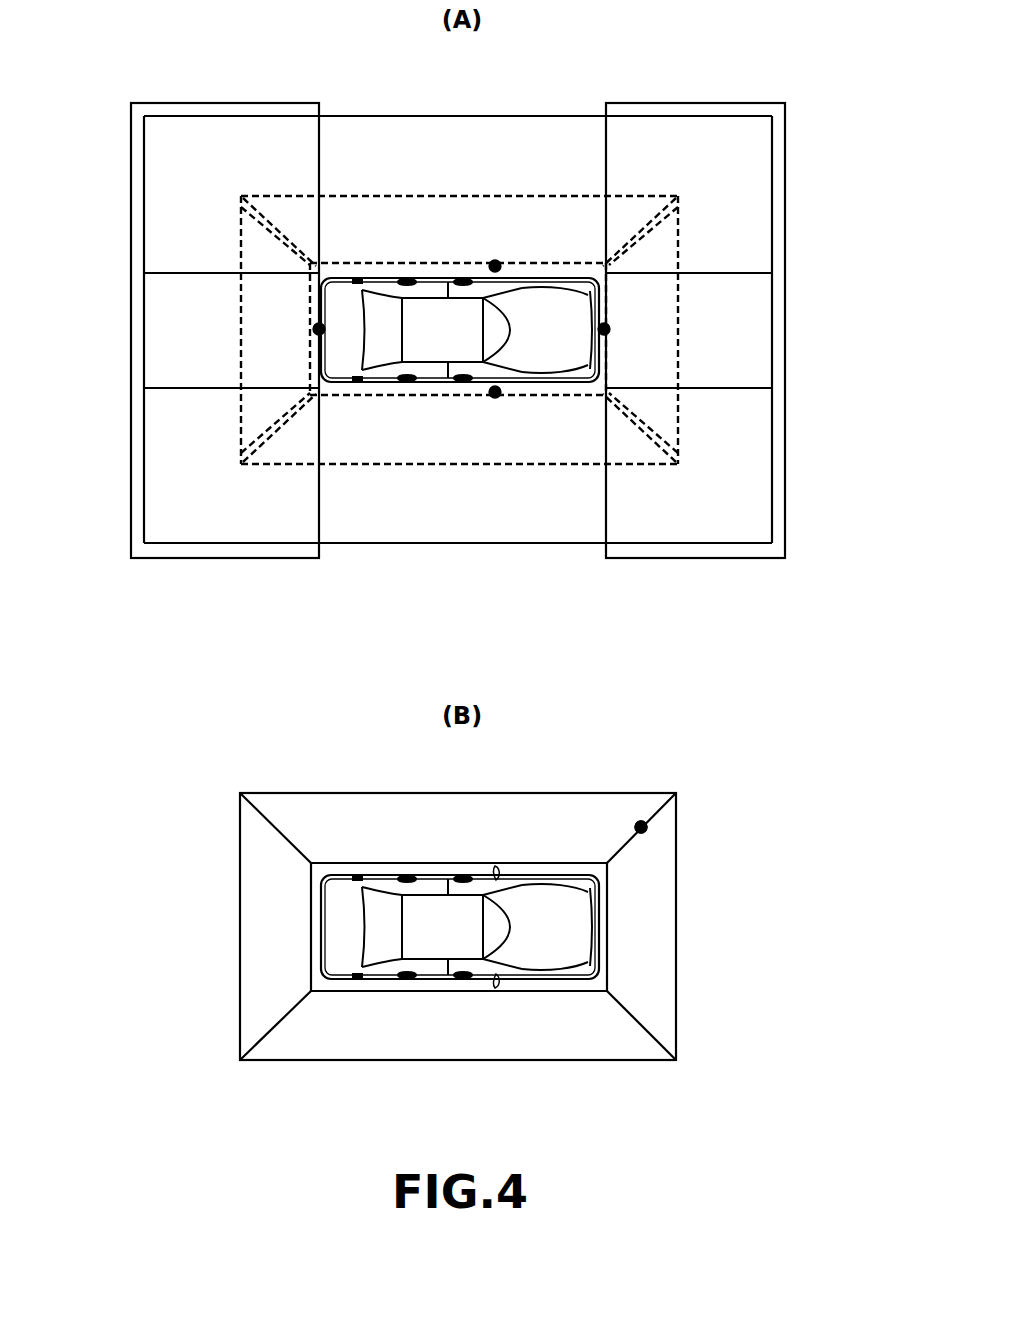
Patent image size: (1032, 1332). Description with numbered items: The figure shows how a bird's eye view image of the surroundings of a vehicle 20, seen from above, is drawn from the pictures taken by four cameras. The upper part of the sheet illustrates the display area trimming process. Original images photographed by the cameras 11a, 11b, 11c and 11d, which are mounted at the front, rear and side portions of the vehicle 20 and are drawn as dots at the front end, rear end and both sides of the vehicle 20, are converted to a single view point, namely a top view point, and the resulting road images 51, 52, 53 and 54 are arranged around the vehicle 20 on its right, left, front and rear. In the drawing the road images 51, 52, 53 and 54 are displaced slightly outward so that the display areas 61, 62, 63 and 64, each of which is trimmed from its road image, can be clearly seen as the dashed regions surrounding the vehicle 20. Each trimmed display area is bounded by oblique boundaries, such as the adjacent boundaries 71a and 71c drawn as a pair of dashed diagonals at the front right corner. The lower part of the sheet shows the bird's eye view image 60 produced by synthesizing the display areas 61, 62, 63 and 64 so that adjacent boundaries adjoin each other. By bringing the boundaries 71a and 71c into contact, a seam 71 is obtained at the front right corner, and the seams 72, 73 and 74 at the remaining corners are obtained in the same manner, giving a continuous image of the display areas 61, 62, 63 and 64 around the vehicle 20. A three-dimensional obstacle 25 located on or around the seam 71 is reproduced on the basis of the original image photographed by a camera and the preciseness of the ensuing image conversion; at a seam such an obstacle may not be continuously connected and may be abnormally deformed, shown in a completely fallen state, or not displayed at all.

The camera 11a is at (610, 333).
The camera 11b is at (313, 329).
The camera 11c is at (497, 265).
The camera 11d is at (495, 398).
The vehicle 20 is at (427, 312).
The three-dimensional obstacle 25 is at (648, 834).
The road image 51 is at (795, 328).
The road image 52 is at (181, 285).
The road image 53 is at (472, 118).
The road image 54 is at (387, 515).
The bird's eye view image 60 is at (447, 1076).
The display area 61 is at (665, 333).
The display area 62 is at (258, 306).
The display area 63 is at (503, 213).
The display area 64 is at (457, 437).
The seam 71 is at (644, 824).
The boundary 71a is at (633, 253).
The boundary 71c is at (640, 230).
The seam 72 is at (283, 828).
The seam 73 is at (283, 1022).
The seam 74 is at (630, 1010).